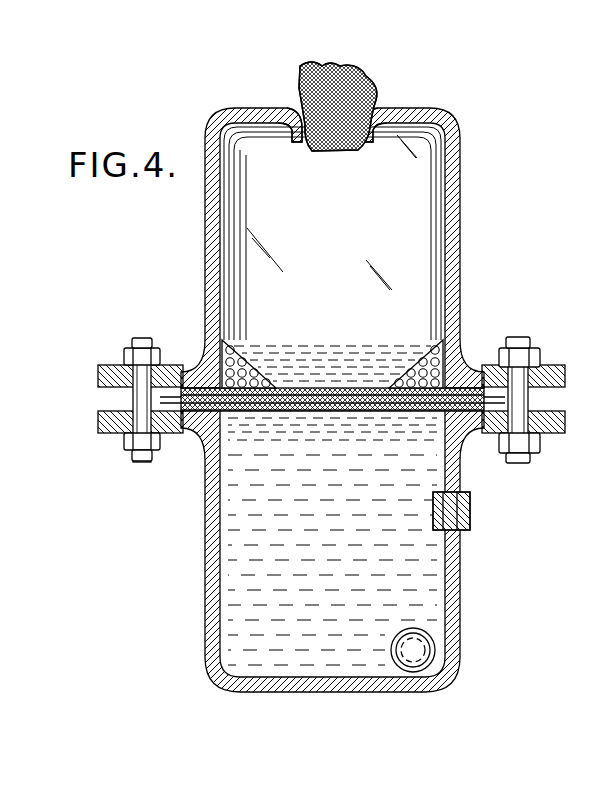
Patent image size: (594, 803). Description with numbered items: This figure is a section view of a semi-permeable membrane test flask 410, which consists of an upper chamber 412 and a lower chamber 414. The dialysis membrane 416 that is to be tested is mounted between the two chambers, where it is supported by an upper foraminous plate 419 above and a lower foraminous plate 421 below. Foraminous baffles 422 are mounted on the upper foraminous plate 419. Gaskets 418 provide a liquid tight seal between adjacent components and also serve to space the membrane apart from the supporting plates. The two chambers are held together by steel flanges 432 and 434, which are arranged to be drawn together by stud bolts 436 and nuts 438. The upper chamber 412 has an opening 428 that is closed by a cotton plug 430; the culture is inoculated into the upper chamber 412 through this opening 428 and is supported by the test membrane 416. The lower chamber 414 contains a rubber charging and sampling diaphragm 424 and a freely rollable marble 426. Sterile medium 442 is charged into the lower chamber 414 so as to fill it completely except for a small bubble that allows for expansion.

The test flask 410 is at (197, 238).
The upper chamber 412 is at (462, 246).
The lower chamber 414 is at (455, 583).
The dialysis membrane 416 is at (332, 405).
The gaskets 418 is at (190, 388).
The upper foraminous plate 419 is at (334, 393).
The lower foraminous plate 421 is at (279, 409).
The foraminous baffles 422 is at (266, 353).
The rubber charging and sampling diaphragm 424 is at (471, 512).
The freely rollable marble 426 is at (432, 648).
The opening 428 is at (300, 93).
The cotton plug 430 is at (343, 68).
The steel flange 432 is at (103, 365).
The steel flange 434 is at (98, 426).
The stud bolts 436 is at (143, 340).
The nuts 438 is at (127, 350).
The sterile medium 442 is at (232, 561).